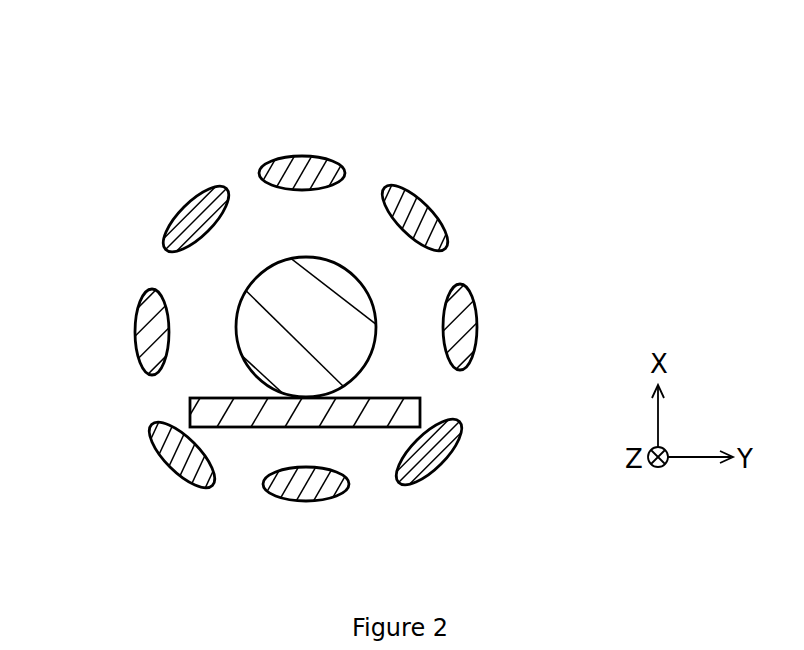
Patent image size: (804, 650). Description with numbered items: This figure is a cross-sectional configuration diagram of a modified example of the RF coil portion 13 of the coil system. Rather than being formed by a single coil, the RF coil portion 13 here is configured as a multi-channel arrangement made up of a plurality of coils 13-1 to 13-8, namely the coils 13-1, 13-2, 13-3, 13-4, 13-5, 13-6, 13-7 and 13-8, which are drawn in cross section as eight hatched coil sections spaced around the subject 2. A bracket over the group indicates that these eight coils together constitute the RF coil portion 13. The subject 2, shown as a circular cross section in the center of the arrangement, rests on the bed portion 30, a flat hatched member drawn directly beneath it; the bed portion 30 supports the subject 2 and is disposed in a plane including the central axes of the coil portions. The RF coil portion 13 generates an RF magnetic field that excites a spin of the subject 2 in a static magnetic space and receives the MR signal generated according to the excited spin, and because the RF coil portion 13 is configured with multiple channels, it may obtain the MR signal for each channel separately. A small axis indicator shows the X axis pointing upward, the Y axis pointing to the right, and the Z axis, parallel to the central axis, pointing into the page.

The radio frequency (RF) coil portion 13 is at (50, 67).
The coil 13-1 is at (148, 332).
The coil 13-2 is at (192, 215).
The coil 13-3 is at (303, 165).
The coil 13-4 is at (418, 213).
The coil 13-5 is at (472, 328).
The coil 13-6 is at (440, 458).
The coil 13-7 is at (305, 493).
The coil 13-8 is at (178, 460).
The subject 2 is at (360, 349).
The bed portion 30 is at (412, 408).